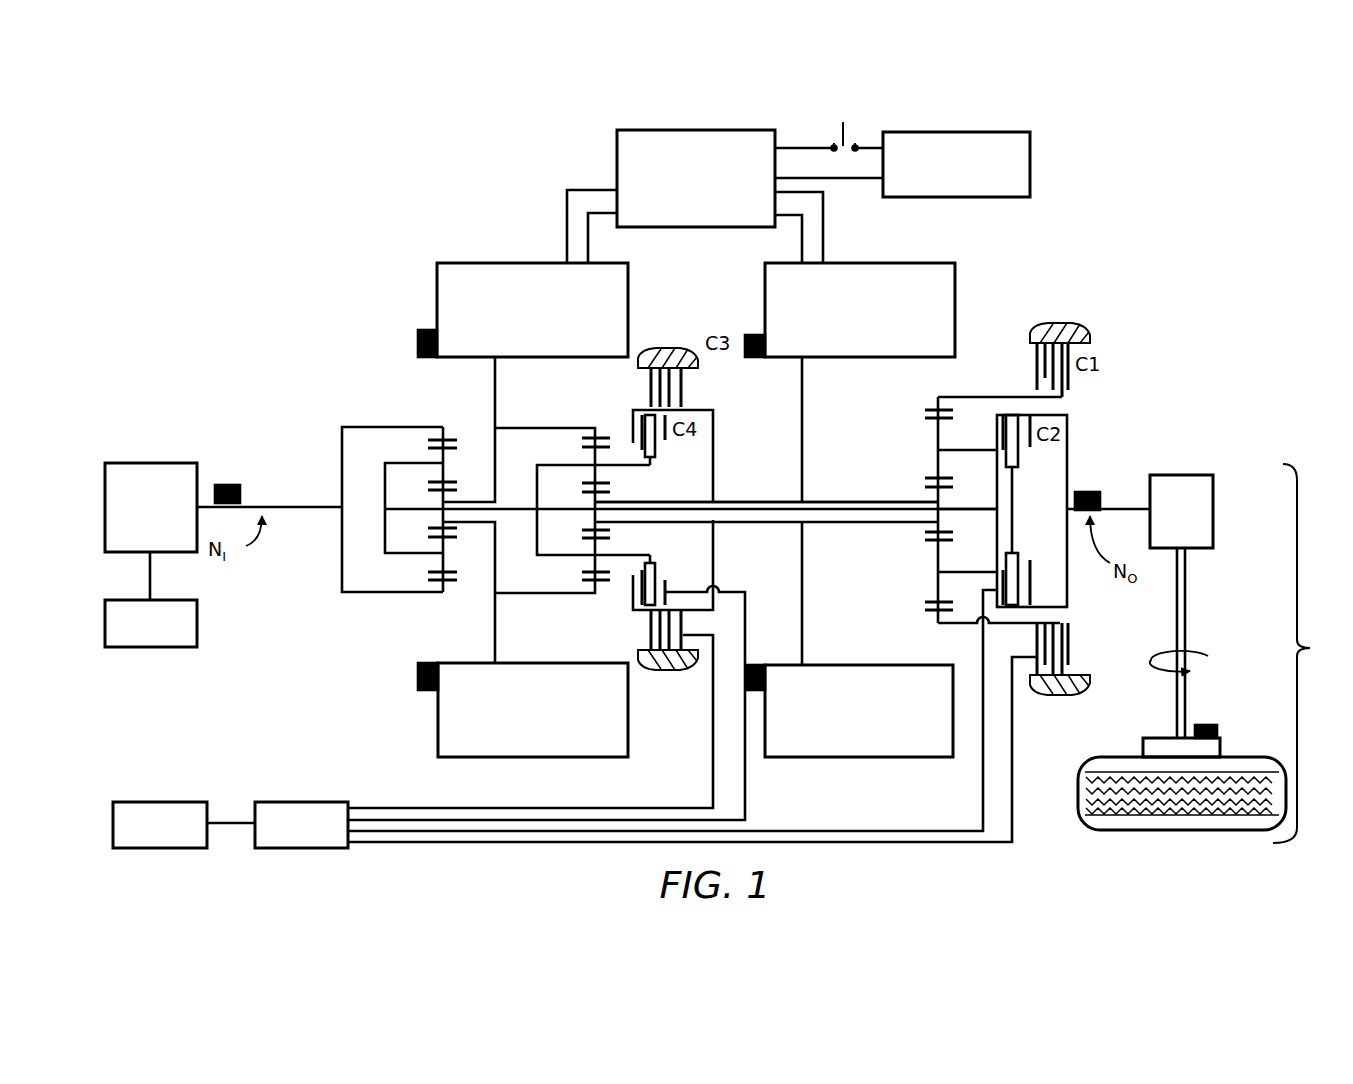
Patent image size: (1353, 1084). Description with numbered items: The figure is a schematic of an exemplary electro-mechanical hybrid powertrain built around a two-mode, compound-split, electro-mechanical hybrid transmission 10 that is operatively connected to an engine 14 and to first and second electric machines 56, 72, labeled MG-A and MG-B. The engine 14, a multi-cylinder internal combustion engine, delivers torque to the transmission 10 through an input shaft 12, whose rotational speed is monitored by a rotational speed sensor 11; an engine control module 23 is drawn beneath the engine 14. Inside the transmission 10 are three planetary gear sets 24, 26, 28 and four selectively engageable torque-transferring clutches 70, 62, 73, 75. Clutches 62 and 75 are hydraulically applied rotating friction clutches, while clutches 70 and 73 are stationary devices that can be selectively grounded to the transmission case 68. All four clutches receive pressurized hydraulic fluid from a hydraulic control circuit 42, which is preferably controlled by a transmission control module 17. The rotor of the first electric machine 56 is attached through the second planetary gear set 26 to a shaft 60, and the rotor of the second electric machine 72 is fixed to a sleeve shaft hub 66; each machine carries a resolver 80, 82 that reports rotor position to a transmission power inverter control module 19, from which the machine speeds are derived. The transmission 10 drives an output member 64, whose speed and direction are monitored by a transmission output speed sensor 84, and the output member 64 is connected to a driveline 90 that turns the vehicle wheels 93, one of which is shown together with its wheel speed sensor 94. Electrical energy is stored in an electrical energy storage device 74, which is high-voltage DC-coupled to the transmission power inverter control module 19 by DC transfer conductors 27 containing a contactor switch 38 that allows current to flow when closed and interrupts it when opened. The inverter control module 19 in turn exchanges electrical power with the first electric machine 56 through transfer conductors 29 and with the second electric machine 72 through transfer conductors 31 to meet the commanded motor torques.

The electro-mechanical hybrid transmission 10 is at (396, 226).
The rotational speed sensor 11 is at (228, 485).
The input shaft 12 is at (303, 505).
The engine 14 is at (156, 463).
The transmission control module 17 is at (150, 802).
The transmission power inverter control module 19 is at (617, 143).
The engine control module (ECM) 23 is at (192, 640).
The planetary gear set 24 is at (434, 420).
The second planetary gear set 26 is at (590, 420).
The DC transfer conductors 27 is at (790, 148).
The planetary gear set 28 is at (932, 394).
The transfer conductors 29 is at (567, 218).
The transfer conductors 31 is at (823, 228).
The contactor switch 38 is at (849, 128).
The hydraulic control circuit 42 is at (270, 802).
The first electric machine 56 is at (437, 296).
The shaft 60 is at (988, 508).
The clutch C2 62 is at (1040, 453).
The output member 64 is at (1125, 507).
The sleeve shaft hub 66 is at (838, 501).
The transmission case 68 is at (668, 352).
The clutch C1 70 is at (1030, 366).
The second electric machine 72 is at (955, 286).
The clutch C3 73 is at (700, 385).
The electrical energy storage device 74 is at (1032, 153).
The clutch C4 75 is at (665, 449).
The resolver 80 is at (418, 342).
The resolver 82 is at (754, 335).
The transmission output speed sensor 84 is at (1090, 490).
The driveline 90 is at (1311, 647).
The vehicle wheel 93 is at (1143, 746).
The wheel speed sensor 94 is at (1210, 725).